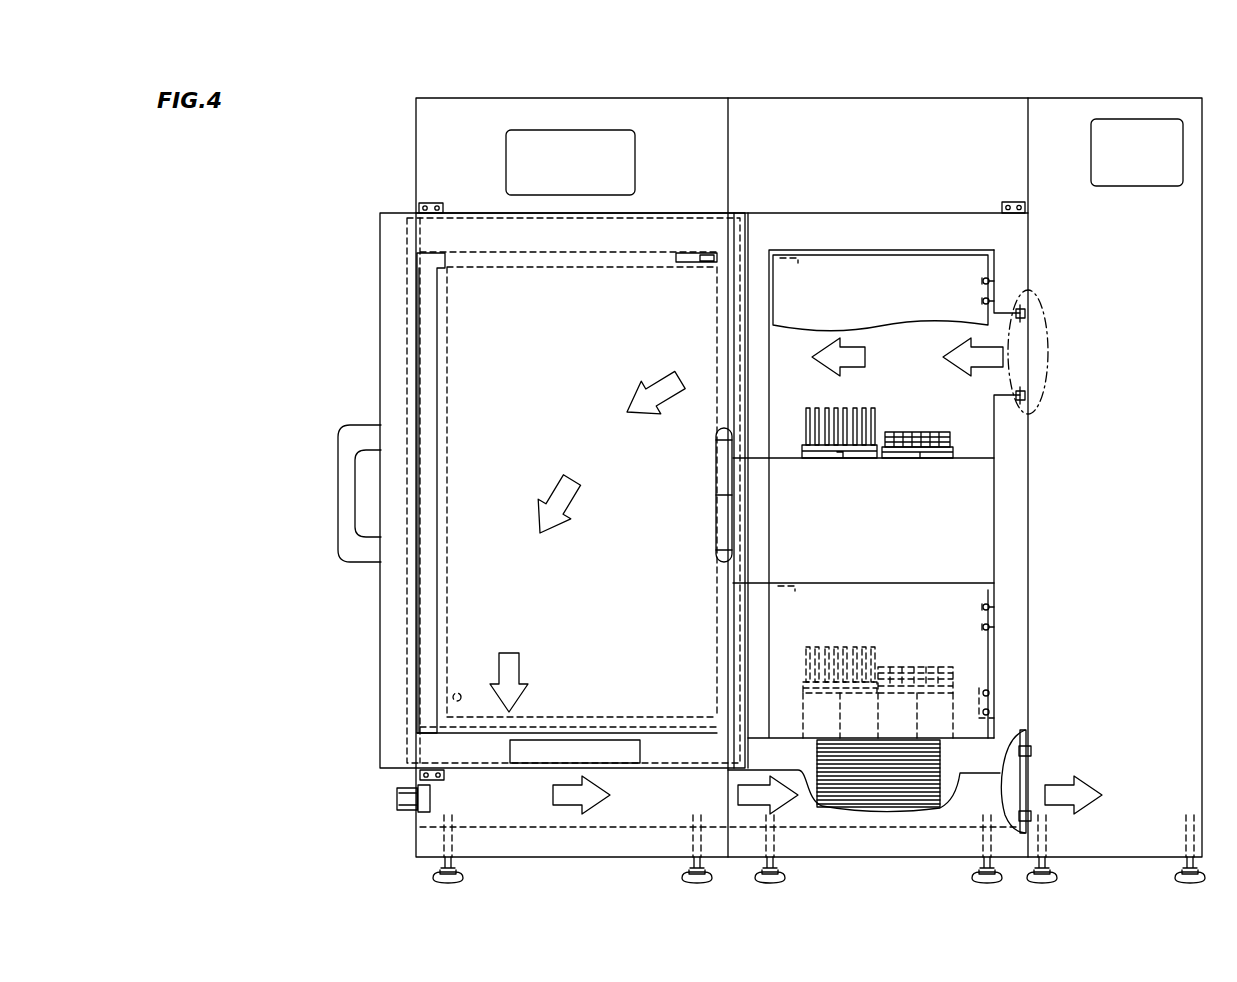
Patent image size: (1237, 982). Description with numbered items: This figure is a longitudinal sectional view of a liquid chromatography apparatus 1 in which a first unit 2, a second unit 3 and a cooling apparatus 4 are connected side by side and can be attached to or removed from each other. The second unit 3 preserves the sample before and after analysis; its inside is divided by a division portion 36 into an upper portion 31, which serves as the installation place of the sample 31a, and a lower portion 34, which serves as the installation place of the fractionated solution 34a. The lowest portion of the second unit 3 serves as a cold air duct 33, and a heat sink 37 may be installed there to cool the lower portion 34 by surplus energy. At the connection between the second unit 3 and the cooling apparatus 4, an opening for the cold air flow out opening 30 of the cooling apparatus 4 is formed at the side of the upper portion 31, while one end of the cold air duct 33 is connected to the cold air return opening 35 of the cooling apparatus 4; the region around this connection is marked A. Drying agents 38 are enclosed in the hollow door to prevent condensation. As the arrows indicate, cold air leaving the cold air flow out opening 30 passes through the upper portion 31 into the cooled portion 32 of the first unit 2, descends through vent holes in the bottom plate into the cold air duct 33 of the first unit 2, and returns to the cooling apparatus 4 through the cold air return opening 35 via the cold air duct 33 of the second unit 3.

The liquid chromatography apparatus 1 is at (366, 140).
The first unit 2 is at (663, 88).
The second unit 3 is at (977, 88).
The cooling apparatus 4 is at (1185, 88).
The cold air flow out opening 30 is at (1020, 358).
The upper portion 31 is at (967, 407).
The sample 31a is at (923, 428).
The cooled portion 32 is at (487, 363).
The cold air duct 33 is at (663, 818).
The lower portion 34 is at (967, 643).
The fractionated solution 34a is at (927, 667).
The cold air return opening 35 is at (1017, 797).
The division portion 36 is at (977, 515).
The heat sink 37 is at (935, 775).
The drying agents 38 is at (542, 755).
The detail region A is at (1047, 310).